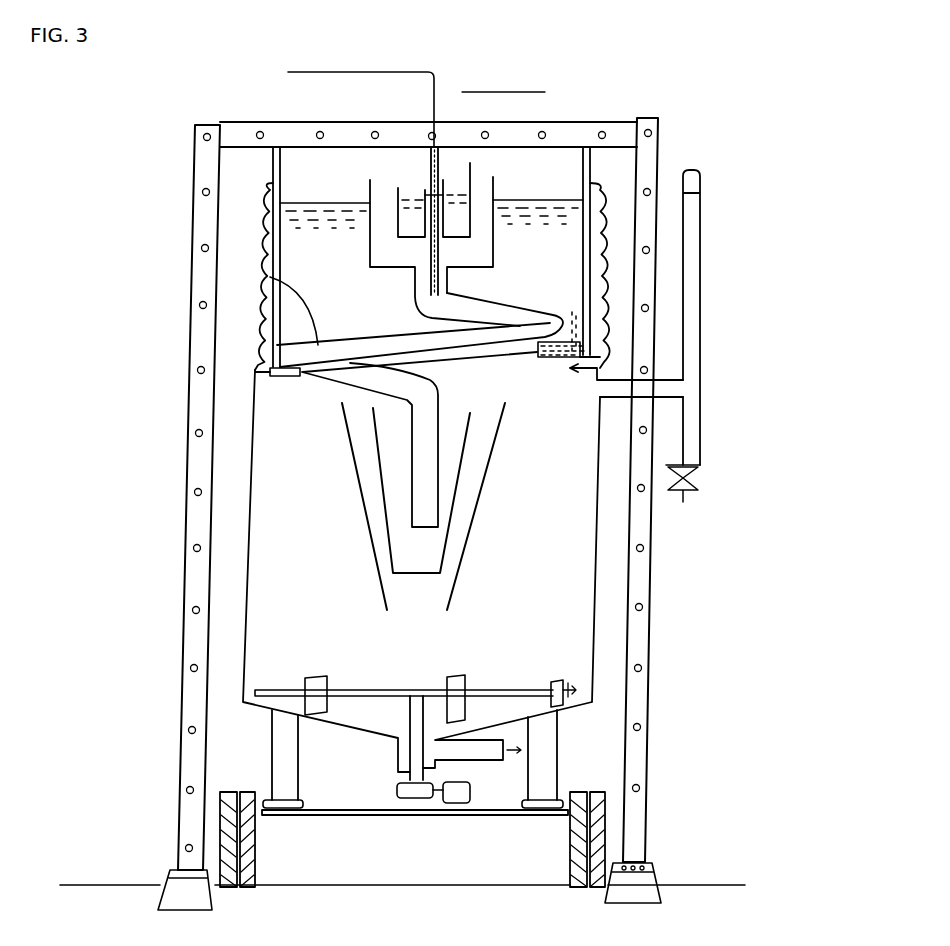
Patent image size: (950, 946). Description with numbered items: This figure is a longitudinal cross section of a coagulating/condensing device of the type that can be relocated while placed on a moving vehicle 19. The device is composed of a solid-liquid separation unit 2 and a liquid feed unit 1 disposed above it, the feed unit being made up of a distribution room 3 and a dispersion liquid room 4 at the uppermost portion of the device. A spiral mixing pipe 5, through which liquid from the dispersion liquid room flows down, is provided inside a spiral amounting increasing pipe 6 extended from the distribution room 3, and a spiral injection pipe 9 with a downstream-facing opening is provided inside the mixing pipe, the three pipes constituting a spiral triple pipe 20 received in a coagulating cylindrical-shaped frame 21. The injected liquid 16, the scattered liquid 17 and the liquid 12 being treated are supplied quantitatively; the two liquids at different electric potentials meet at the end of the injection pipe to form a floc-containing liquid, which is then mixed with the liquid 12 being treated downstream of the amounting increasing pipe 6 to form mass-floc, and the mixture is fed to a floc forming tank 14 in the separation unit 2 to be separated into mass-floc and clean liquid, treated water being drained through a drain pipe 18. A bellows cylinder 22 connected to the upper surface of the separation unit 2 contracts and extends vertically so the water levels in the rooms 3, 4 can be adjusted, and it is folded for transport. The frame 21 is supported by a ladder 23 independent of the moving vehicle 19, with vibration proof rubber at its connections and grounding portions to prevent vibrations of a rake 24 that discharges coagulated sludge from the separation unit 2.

The liquid feed unit 1 is at (607, 95).
The solid-liquid separation unit 2 is at (571, 532).
The distribution room 3 is at (497, 193).
The dispersion liquid room 4 is at (464, 168).
The spiral mixing pipe 5 is at (445, 257).
The spiral amounting increasing pipe 6 is at (268, 277).
The spiral injection pipe 9 is at (430, 163).
The liquid being treated 12 is at (490, 112).
The floc forming tank 14 is at (457, 498).
The injected liquid 16 is at (385, 72).
The scattered liquid 17 is at (492, 173).
The drain pipe 18 is at (683, 390).
The moving vehicle 19 is at (357, 812).
The spiral triple pipe 20 is at (282, 327).
The coagulating cylindrical-shaped frame 21 is at (560, 358).
The bellows cylinder 22 is at (262, 218).
The ladder 23 is at (197, 415).
The rake 24 is at (345, 690).